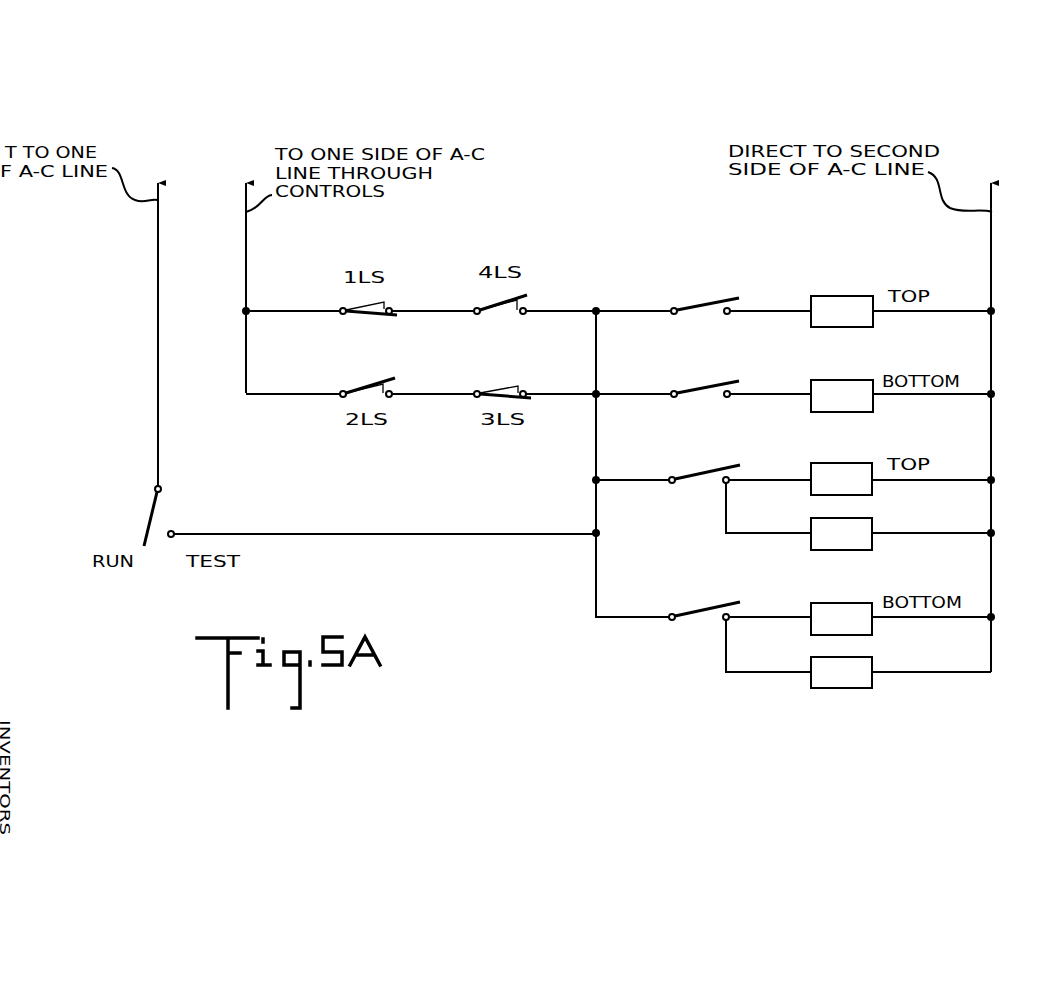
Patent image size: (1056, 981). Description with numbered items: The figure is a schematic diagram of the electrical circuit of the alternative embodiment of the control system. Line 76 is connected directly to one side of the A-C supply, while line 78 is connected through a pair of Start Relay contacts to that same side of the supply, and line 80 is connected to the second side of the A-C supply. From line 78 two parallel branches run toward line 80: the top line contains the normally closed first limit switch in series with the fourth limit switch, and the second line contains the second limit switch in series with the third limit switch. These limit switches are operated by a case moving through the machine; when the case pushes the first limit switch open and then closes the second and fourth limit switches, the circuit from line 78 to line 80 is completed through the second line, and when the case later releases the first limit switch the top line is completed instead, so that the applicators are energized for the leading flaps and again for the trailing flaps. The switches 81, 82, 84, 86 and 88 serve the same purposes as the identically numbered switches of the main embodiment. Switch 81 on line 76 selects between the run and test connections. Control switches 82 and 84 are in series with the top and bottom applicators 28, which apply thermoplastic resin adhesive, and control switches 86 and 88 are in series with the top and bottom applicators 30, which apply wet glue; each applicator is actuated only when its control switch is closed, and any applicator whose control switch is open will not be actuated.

The line 76 is at (158, 241).
The line 78 is at (246, 255).
The line 80 is at (991, 263).
The switch 81 is at (150, 519).
The control switch 82 is at (703, 299).
The control switch 84 is at (703, 383).
The control switch 86 is at (701, 468).
The control switch 88 is at (699, 606).
The applicator 28 is at (845, 316).
The applicator 30 is at (858, 483).